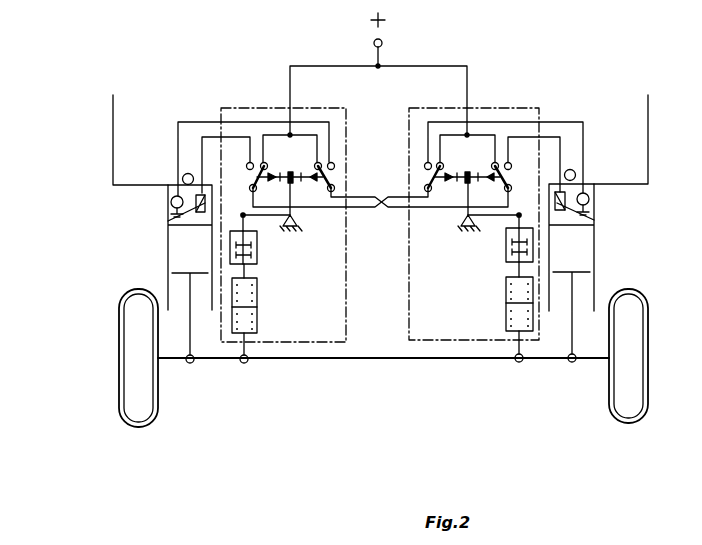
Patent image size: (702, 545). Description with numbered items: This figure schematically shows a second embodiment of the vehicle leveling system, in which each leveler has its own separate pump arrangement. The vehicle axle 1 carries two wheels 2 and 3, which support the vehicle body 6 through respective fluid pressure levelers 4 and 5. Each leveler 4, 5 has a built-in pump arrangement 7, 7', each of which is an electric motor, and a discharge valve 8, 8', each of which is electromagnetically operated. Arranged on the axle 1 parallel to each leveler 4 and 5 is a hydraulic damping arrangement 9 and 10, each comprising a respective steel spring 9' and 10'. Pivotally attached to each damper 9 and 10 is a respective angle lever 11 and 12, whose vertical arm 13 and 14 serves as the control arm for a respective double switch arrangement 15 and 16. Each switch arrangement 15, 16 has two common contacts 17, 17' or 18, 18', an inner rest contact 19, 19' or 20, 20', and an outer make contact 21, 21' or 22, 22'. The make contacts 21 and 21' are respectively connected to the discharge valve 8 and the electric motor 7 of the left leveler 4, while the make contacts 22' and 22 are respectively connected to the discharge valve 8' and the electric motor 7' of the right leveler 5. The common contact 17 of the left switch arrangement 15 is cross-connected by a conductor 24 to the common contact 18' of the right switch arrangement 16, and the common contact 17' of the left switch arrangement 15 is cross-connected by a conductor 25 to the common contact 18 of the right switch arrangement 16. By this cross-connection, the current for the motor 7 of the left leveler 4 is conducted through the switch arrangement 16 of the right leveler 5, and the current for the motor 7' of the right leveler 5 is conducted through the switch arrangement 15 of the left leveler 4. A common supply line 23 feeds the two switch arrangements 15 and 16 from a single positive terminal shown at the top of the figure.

The axle 1 is at (383, 360).
The wheel 2 is at (139, 424).
The wheel 3 is at (629, 422).
The leveler 4 is at (167, 263).
The leveler 5 is at (596, 276).
The vehicle body 6 is at (113, 147).
The pump arrangement 7 is at (154, 196).
The pump arrangement 7' is at (598, 193).
The discharge valve 8 is at (167, 218).
The discharge valve 8' is at (596, 212).
The hydraulic damping arrangement 9 is at (269, 336).
The steel spring 9' is at (251, 352).
The hydraulic damping arrangement 10 is at (491, 326).
The steel spring 10' is at (511, 343).
The angle lever 11 is at (263, 219).
The angle lever 12 is at (496, 219).
The vertical arm 13 is at (292, 195).
The vertical arm 14 is at (466, 195).
The double switch arrangement 15 is at (275, 130).
The double switch arrangement 16 is at (482, 130).
The common contact 17 is at (267, 186).
The common contact 17' is at (348, 179).
The common contact 18 is at (512, 188).
The common contact 18' is at (410, 179).
The rest contact 19 is at (273, 156).
The rest contact 19' is at (308, 157).
The rest contact 20 is at (449, 156).
The rest contact 20' is at (484, 157).
The make contact 21 is at (239, 156).
The make contact 21' is at (353, 157).
The make contact 22 is at (406, 153).
The make contact 22' is at (522, 156).
The supply line 23 is at (348, 65).
The conductor 24 is at (377, 205).
The conductor 25 is at (402, 209).